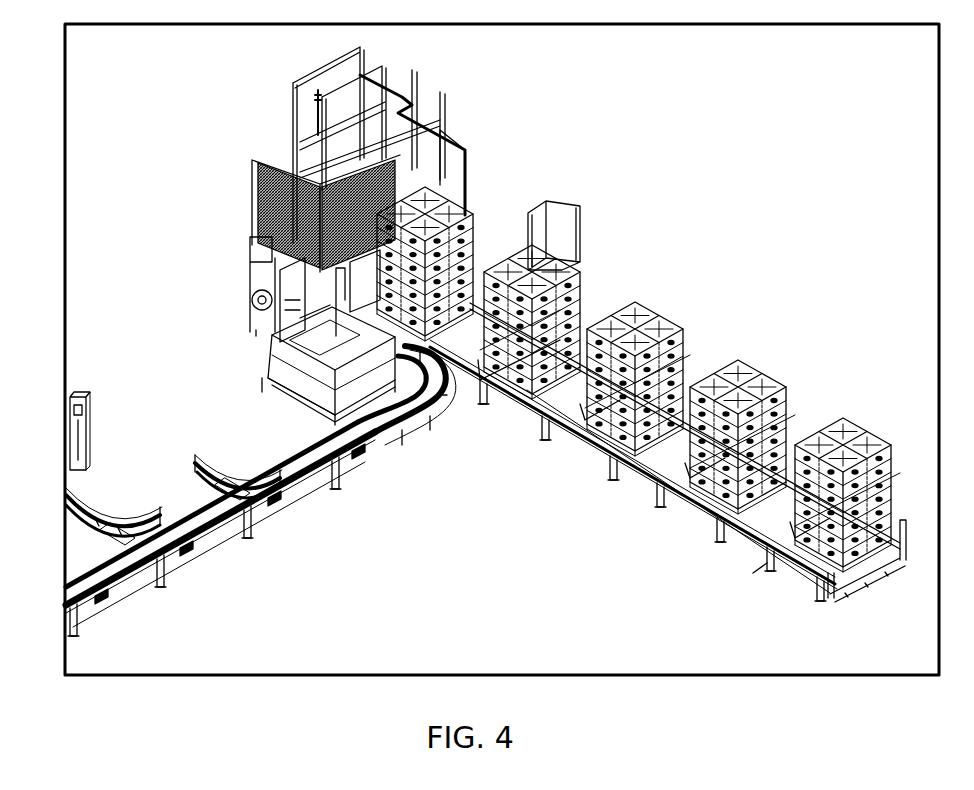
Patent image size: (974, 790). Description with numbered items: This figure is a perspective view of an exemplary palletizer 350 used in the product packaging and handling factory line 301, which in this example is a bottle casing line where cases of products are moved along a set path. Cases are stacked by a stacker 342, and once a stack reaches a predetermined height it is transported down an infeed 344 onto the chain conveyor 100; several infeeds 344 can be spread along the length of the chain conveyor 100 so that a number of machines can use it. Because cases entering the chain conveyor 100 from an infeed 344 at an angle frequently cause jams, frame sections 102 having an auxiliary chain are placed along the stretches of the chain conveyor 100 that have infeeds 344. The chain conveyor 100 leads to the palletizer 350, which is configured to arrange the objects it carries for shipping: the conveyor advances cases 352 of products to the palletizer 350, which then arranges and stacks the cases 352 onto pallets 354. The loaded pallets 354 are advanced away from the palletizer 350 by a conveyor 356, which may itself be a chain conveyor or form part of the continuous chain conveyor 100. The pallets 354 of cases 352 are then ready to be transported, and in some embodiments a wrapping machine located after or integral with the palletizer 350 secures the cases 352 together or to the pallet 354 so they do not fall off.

The chain conveyor 100 is at (393, 448).
The frame section 102 is at (287, 507).
The factory line 301 is at (146, 374).
The stacker 342 is at (88, 428).
The infeed 344 is at (226, 463).
The palletizer 350 is at (258, 140).
The case 352 is at (566, 276).
The pallet 354 is at (557, 407).
The conveyor 356 is at (667, 458).